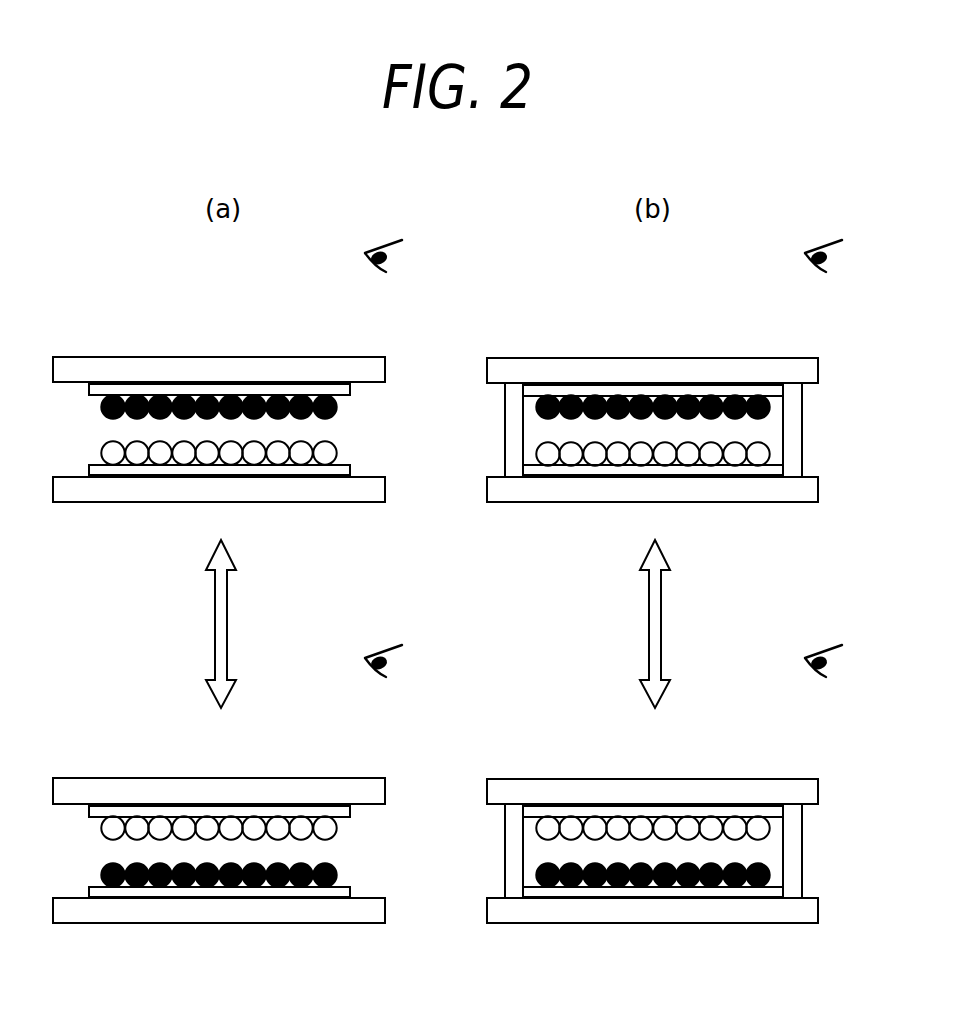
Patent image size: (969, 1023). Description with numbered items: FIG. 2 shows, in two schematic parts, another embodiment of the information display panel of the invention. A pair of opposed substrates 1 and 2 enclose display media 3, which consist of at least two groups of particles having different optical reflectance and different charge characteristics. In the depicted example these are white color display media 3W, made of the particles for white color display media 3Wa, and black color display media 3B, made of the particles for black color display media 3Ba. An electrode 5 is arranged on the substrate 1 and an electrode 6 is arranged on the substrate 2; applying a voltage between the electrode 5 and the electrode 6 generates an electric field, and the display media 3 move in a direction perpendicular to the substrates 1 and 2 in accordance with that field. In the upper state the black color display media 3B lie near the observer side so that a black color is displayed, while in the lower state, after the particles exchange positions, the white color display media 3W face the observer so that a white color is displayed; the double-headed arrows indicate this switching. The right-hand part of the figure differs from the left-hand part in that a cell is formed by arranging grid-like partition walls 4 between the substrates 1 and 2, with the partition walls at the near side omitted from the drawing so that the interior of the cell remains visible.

The substrate 1 is at (137, 495).
The substrate 2 is at (221, 370).
The display media 3 is at (414, 395).
The black color display media 3B is at (365, 397).
The white color display media 3W is at (365, 436).
The particles for white color display media 3Wa is at (298, 826).
The particles for black color display media 3Ba is at (305, 885).
The partition walls 4 is at (792, 392).
The electrode 5 is at (300, 470).
The electrode 6 is at (302, 388).